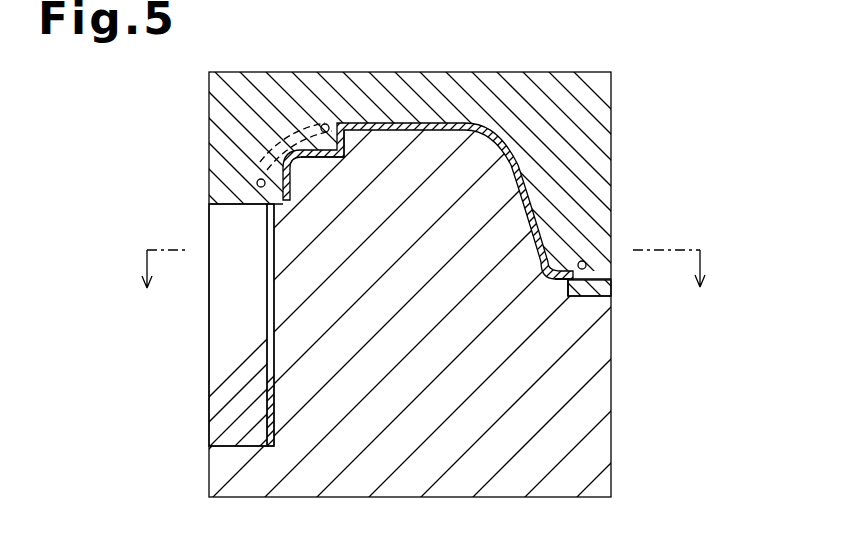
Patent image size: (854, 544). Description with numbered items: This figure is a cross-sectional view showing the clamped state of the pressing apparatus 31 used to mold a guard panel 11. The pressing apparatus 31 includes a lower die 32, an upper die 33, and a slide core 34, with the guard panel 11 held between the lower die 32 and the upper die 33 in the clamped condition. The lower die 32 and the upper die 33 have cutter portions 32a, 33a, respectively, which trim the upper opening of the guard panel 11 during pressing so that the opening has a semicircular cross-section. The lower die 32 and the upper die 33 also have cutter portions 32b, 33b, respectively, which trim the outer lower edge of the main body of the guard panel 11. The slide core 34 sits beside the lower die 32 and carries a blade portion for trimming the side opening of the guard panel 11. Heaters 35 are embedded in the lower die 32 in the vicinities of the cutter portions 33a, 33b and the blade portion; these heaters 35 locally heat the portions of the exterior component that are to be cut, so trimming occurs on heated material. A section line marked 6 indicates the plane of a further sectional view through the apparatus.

The pressing apparatus 31 is at (638, 71).
The upper die 33 is at (612, 137).
The cutter portion 33a is at (328, 121).
The cutter portion 33b is at (604, 285).
The lower die 32 is at (604, 483).
The cutter portion 32a is at (350, 135).
The cutter portion 32b is at (562, 281).
The slide core 34 is at (220, 224).
The heater 35 is at (256, 182).
The guard panel 11 is at (538, 222).
The section line 6- 6 is at (424, 287).